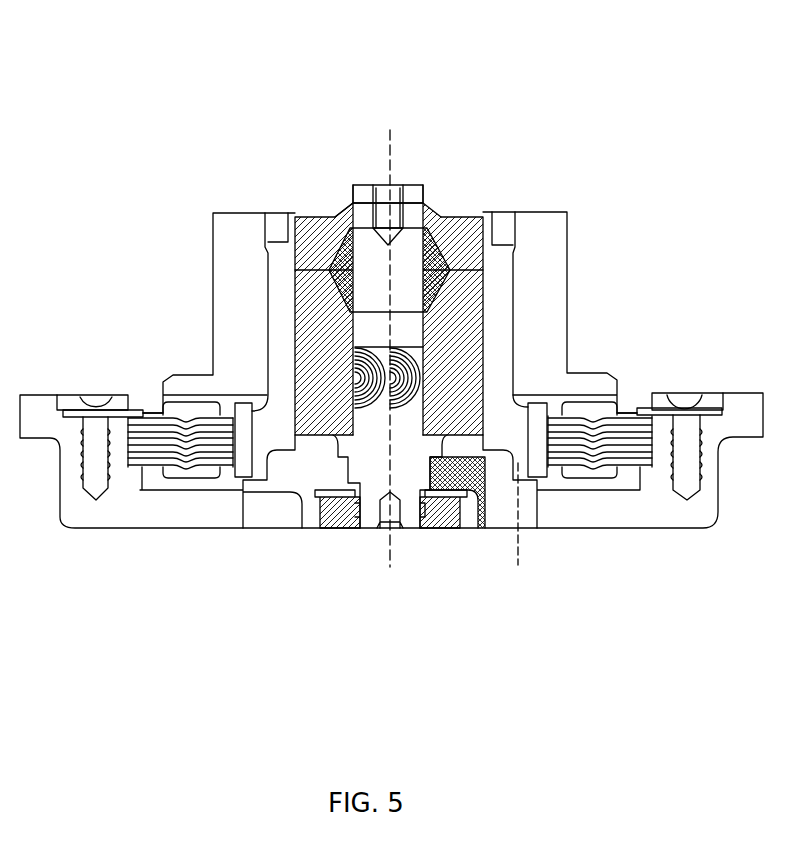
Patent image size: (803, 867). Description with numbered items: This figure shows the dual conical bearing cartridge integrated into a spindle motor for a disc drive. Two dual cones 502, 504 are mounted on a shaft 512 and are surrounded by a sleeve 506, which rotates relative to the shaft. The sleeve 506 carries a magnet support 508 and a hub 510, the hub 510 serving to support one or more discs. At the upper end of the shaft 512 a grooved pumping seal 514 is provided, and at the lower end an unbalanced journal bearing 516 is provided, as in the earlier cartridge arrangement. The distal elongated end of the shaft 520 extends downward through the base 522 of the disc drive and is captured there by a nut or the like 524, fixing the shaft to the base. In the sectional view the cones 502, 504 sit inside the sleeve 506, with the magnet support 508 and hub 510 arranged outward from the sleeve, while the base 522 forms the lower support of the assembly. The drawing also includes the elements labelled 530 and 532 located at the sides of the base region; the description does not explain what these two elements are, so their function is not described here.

The cone 502 is at (316, 292).
The cone 504 is at (320, 233).
The sleeve 506 is at (470, 295).
The magnet support 508 is at (498, 333).
The hub 510 is at (548, 335).
The shaft 512 is at (412, 195).
The grooved pumping seal 514 is at (418, 213).
The unbalanced journal bearing 516 is at (373, 402).
The distal elongated end of the shaft 520 is at (405, 487).
The base 522 is at (502, 517).
The nut 524 is at (337, 527).
The support plate 530 is at (535, 423).
The bellows spring 532 is at (620, 432).